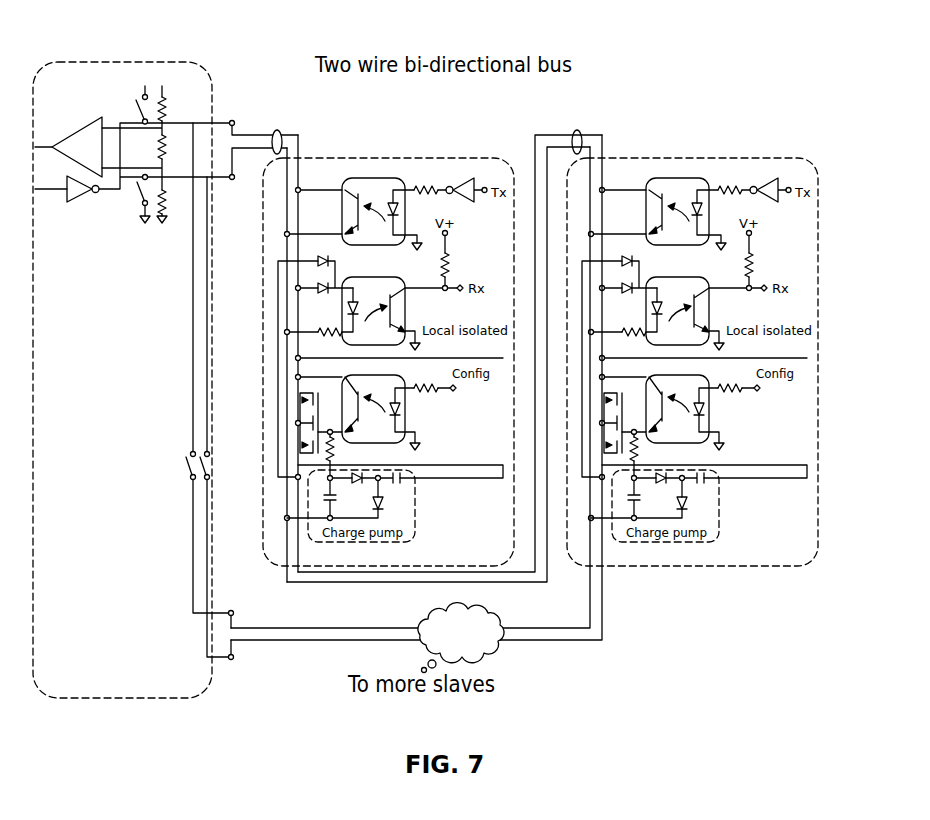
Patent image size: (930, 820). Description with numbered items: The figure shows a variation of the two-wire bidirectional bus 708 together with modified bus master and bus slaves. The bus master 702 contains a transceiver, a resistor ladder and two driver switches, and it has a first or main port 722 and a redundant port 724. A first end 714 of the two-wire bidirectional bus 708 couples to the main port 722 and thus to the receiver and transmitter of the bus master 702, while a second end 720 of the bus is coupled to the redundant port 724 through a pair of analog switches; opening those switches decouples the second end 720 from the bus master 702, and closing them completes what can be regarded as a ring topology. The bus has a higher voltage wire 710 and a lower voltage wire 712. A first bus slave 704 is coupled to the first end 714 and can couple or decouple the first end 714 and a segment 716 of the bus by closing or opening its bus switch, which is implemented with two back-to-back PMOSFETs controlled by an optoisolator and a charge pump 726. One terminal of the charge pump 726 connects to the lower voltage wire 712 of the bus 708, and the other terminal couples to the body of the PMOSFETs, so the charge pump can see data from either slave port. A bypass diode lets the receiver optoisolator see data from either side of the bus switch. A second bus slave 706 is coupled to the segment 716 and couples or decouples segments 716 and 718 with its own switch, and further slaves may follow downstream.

The bus master 702 is at (115, 62).
The main port 722 is at (205, 148).
The first bus wire (D+) 710 is at (248, 133).
The lower voltage wire 712 is at (260, 150).
The two-wire bidirectional bus 708 is at (283, 131).
The first end 714 is at (320, 139).
The first bus slave 704 is at (388, 334).
The segment 716 is at (548, 134).
The second bus slave 706 is at (693, 158).
The charge pump 726 is at (417, 523).
The redundant port 724 is at (208, 633).
The second end 720 is at (248, 657).
The segment 718 is at (583, 642).